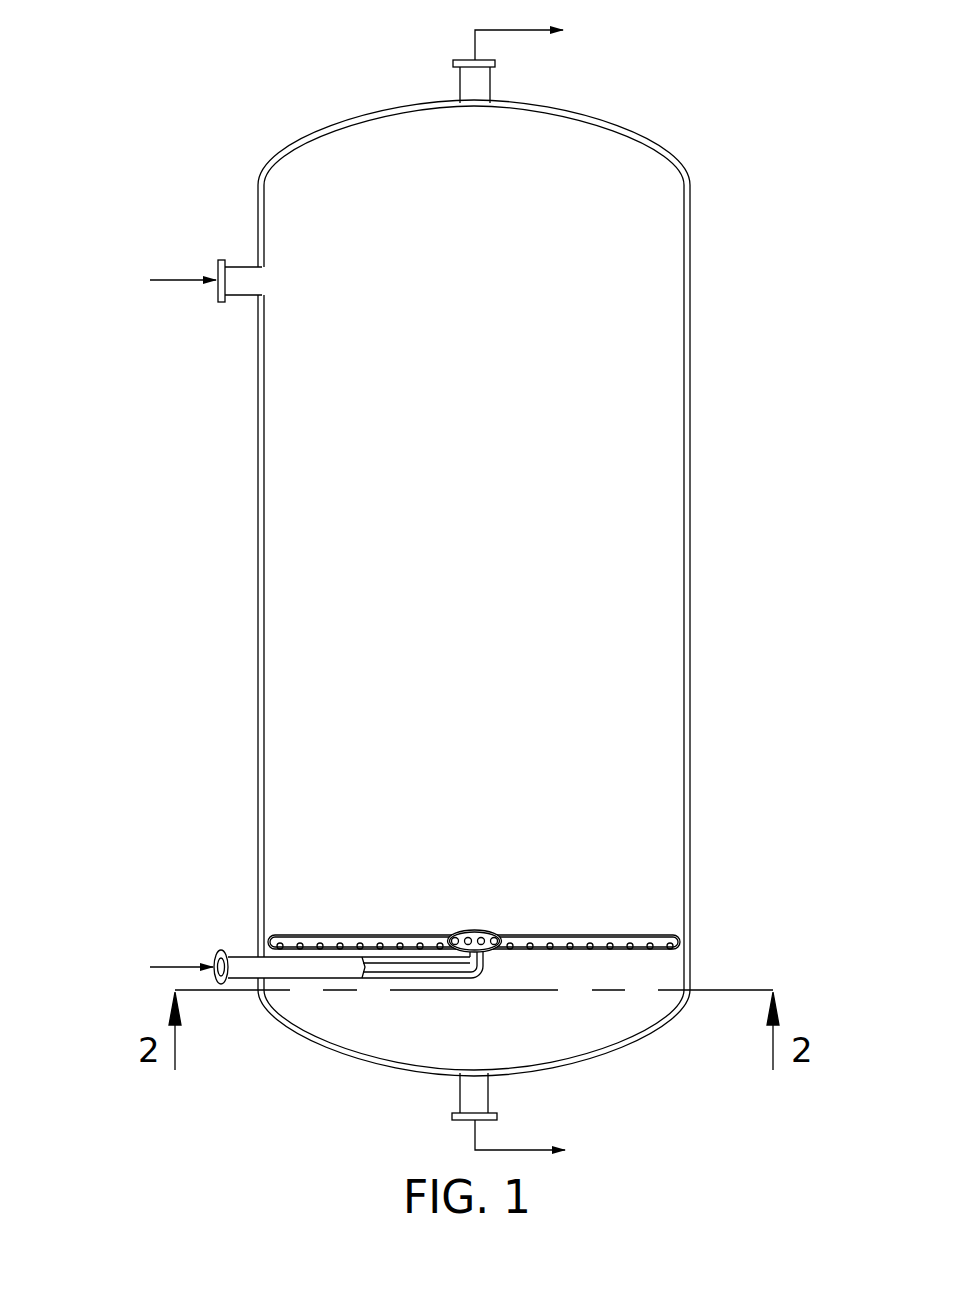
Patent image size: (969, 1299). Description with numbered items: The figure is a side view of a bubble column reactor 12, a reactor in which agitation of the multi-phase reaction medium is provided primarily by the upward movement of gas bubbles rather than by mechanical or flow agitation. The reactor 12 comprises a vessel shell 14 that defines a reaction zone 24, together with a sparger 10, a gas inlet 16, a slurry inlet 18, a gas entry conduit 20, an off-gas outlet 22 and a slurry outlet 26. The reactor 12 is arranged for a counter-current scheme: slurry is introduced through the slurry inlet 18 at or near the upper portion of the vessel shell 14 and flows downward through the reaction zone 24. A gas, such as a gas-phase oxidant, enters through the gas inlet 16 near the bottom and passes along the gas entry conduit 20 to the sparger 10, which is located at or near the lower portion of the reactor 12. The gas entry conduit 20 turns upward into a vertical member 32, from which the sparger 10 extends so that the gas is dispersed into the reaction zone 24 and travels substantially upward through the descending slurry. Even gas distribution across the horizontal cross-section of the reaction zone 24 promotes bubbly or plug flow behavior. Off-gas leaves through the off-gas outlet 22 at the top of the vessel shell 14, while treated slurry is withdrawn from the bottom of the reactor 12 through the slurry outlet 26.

The sparger 10 is at (557, 935).
The bubble column reactor 12 is at (253, 76).
The vessel shell 14 is at (690, 392).
The gas inlet 16 is at (213, 960).
The slurry inlet 18 is at (218, 290).
The gas entry conduit 20 is at (370, 968).
The off-gas outlet 22 is at (483, 80).
The reaction zone 24 is at (507, 563).
The slurry outlet 26 is at (489, 1095).
The vertical member 32 is at (478, 968).